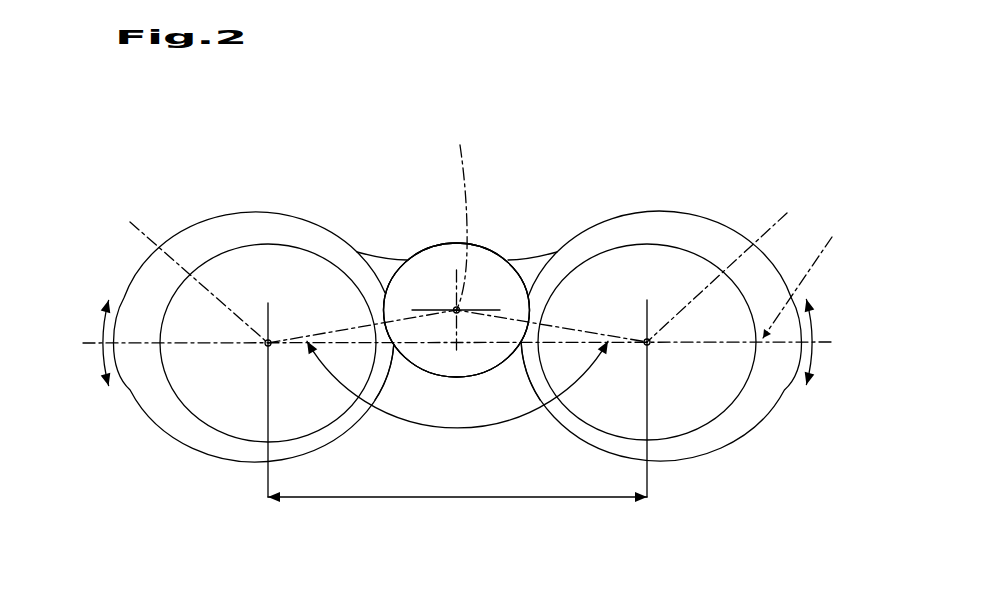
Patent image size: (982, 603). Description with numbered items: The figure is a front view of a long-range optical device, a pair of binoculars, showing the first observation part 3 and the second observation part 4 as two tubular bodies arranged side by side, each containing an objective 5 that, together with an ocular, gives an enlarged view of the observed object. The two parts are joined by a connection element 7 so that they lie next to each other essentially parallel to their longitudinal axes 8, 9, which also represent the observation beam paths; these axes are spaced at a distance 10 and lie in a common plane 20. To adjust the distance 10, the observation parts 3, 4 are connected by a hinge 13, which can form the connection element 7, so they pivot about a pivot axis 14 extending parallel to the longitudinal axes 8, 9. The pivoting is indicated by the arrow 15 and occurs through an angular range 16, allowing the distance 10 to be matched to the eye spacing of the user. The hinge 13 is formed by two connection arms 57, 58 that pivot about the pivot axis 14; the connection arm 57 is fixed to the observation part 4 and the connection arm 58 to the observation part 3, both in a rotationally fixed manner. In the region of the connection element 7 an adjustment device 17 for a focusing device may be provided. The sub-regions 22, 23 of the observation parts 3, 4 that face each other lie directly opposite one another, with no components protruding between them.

The first observation part 3 is at (670, 227).
The second observation part 4 is at (242, 240).
The objective 5 is at (228, 407).
The connection element 7 is at (426, 232).
The longitudinal axis 8 is at (192, 270).
The longitudinal axis 9 is at (720, 267).
The distance 10 is at (408, 499).
The hinge 13 is at (495, 241).
The pivot axis 14 is at (459, 214).
The arrow 15 is at (98, 328).
The angular range 16 is at (467, 430).
The adjustment device 17 is at (482, 377).
The plane 20 is at (806, 276).
The sub-region 22 is at (396, 368).
The sub-region 23 is at (518, 368).
The connection arm 57 is at (390, 259).
The connection arm 58 is at (522, 259).